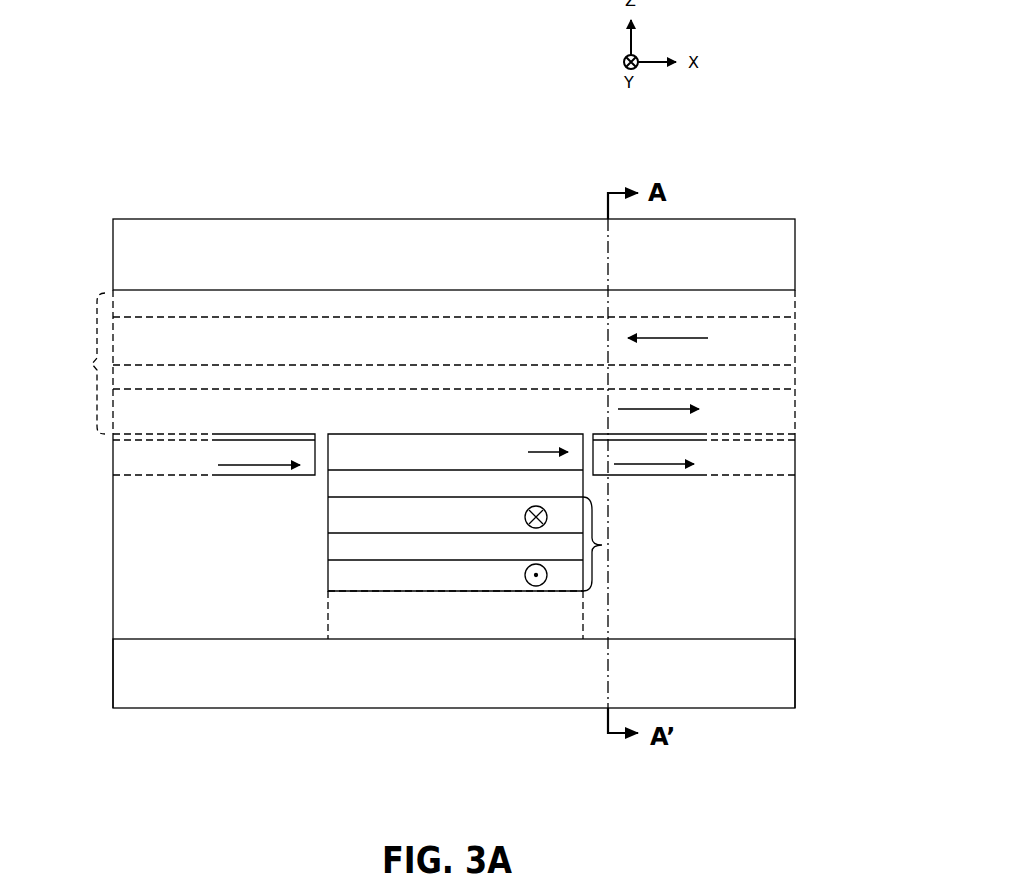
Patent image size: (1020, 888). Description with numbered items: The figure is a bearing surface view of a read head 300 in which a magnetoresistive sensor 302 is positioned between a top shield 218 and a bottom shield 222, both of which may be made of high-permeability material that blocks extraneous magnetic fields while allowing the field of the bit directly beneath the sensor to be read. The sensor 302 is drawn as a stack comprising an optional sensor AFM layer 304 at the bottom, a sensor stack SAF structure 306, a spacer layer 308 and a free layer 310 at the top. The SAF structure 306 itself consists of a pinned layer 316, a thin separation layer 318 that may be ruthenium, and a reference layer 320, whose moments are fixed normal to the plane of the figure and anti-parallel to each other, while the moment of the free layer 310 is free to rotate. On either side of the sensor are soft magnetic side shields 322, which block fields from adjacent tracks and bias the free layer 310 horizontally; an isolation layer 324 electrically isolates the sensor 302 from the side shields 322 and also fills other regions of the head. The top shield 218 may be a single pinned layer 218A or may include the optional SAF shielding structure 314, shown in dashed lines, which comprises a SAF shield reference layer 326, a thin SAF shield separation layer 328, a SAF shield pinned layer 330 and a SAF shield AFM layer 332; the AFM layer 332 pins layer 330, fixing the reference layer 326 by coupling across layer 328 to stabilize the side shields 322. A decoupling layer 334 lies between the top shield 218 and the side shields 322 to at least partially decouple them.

The read head 300 is at (128, 126).
The single pinned layer 218A is at (587, 266).
The top shield 218 is at (806, 317).
The SAF shield AFM layer 332 is at (580, 315).
The SAF shield pinned layer 330 is at (580, 350).
The SAF shield separation layer 328 is at (580, 386).
The SAF shield reference layer 326 is at (580, 420).
The SAF shielding structure 314 is at (91, 364).
The decoupling layer 334 is at (215, 436).
The side shields 322 is at (272, 463).
The isolation layer 324 is at (322, 464).
The magnetoresistive sensor 302 is at (306, 584).
The free layer 310 is at (386, 462).
The spacer layer 308 is at (386, 491).
The reference layer 320 is at (386, 525).
The separation layer 318 is at (386, 556).
The pinned layer 316 is at (386, 586).
The sensor antiferromagnetic layer 304 is at (386, 623).
The sensor stack synthetic antiferromagnetic structure 306 is at (603, 548).
The bottom shield 222 is at (580, 681).